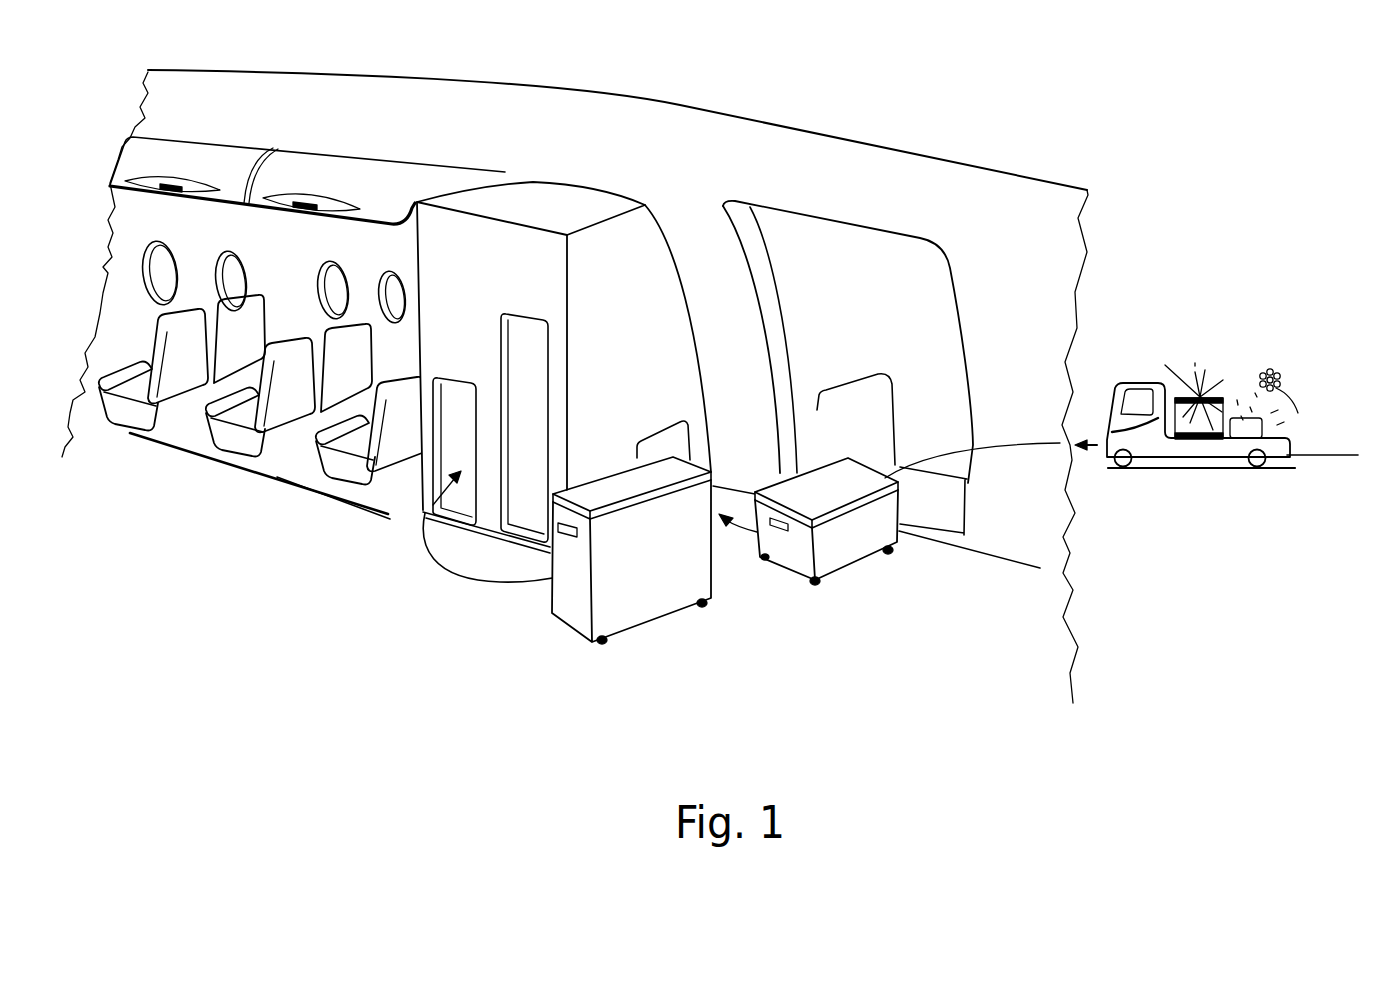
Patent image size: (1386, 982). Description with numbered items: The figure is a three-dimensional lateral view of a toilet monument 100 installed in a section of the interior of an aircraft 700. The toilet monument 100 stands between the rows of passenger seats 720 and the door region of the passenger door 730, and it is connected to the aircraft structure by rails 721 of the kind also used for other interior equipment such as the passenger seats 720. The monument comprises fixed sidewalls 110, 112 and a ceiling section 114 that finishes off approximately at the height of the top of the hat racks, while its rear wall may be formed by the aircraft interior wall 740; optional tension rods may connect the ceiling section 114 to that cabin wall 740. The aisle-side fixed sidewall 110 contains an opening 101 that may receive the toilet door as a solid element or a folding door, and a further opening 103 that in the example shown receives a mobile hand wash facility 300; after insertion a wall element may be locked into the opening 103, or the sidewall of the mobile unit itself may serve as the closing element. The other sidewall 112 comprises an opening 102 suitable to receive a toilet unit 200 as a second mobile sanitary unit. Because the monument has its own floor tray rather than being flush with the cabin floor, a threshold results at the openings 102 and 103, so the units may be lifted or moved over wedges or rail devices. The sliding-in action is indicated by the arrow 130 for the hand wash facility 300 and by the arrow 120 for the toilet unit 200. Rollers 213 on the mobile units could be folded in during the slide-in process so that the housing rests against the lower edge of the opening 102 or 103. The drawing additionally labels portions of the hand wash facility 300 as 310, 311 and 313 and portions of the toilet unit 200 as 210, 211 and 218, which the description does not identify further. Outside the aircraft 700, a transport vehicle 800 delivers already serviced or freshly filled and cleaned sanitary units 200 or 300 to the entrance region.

The aircraft 700 is at (395, 113).
The aircraft interior wall 740 is at (412, 328).
The passenger door 730 is at (828, 254).
The passenger seats 720 is at (139, 413).
The rails 721 is at (245, 453).
The toilet monument 100 is at (564, 357).
The ceiling section 114 is at (531, 208).
The sidewall 112 is at (664, 338).
The fixed sidewall 110 is at (492, 377).
The further opening 103 is at (455, 400).
The opening 101 is at (525, 428).
The opening 102 is at (663, 450).
The arrow 130 is at (495, 561).
The arrow 120 is at (735, 533).
The hand wash facility 300 is at (868, 555).
The trolley front wall 310 is at (631, 561).
The trolley top 311 is at (632, 488).
The trolley rollers 313 is at (703, 606).
The toilet unit 200 is at (995, 525).
The container side wall 210 is at (826, 535).
The container top 211 is at (826, 493).
The rollers 213 is at (890, 553).
The container handle 218 is at (781, 534).
The transport vehicle 800 is at (1210, 450).